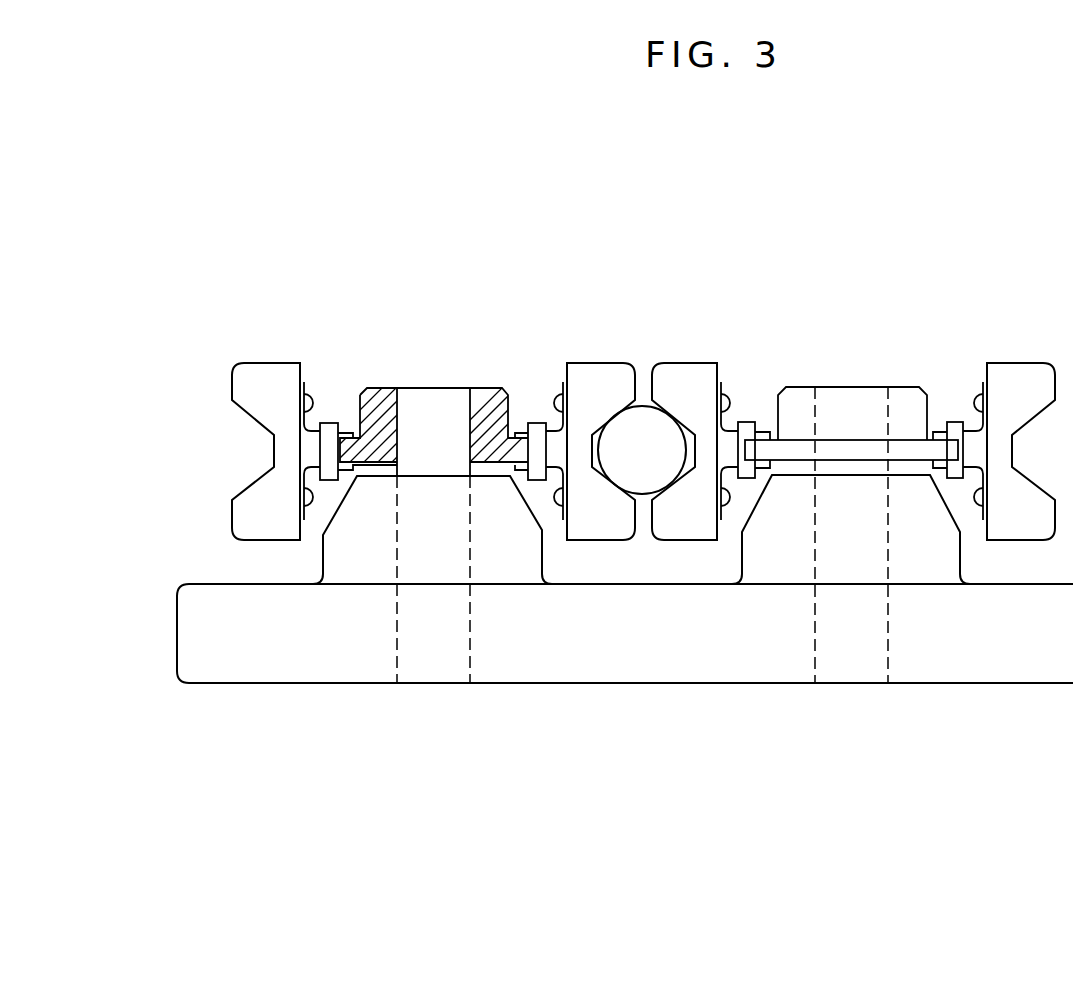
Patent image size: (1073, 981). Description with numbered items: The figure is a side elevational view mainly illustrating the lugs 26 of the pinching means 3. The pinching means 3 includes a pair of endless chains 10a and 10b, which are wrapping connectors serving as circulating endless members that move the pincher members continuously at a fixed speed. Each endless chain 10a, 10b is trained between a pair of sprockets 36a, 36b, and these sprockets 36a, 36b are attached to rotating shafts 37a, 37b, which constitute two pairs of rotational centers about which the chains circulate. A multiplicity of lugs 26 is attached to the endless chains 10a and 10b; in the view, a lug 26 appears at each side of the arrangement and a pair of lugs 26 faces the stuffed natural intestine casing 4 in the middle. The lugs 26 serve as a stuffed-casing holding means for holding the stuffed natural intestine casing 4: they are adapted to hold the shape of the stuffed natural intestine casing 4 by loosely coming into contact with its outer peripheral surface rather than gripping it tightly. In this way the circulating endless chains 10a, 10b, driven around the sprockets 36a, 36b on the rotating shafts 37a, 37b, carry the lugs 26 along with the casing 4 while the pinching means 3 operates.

The pinching means 3 is at (716, 758).
The stuffed natural intestine casing 4 is at (640, 428).
The lugs 26 is at (268, 388).
The sprockets 36a is at (905, 410).
The sprockets 36b is at (494, 405).
The rotating shafts 37a is at (830, 405).
The rotating shafts 37b is at (418, 407).
The endless chain 10a is at (950, 432).
The endless chain 10b is at (538, 455).